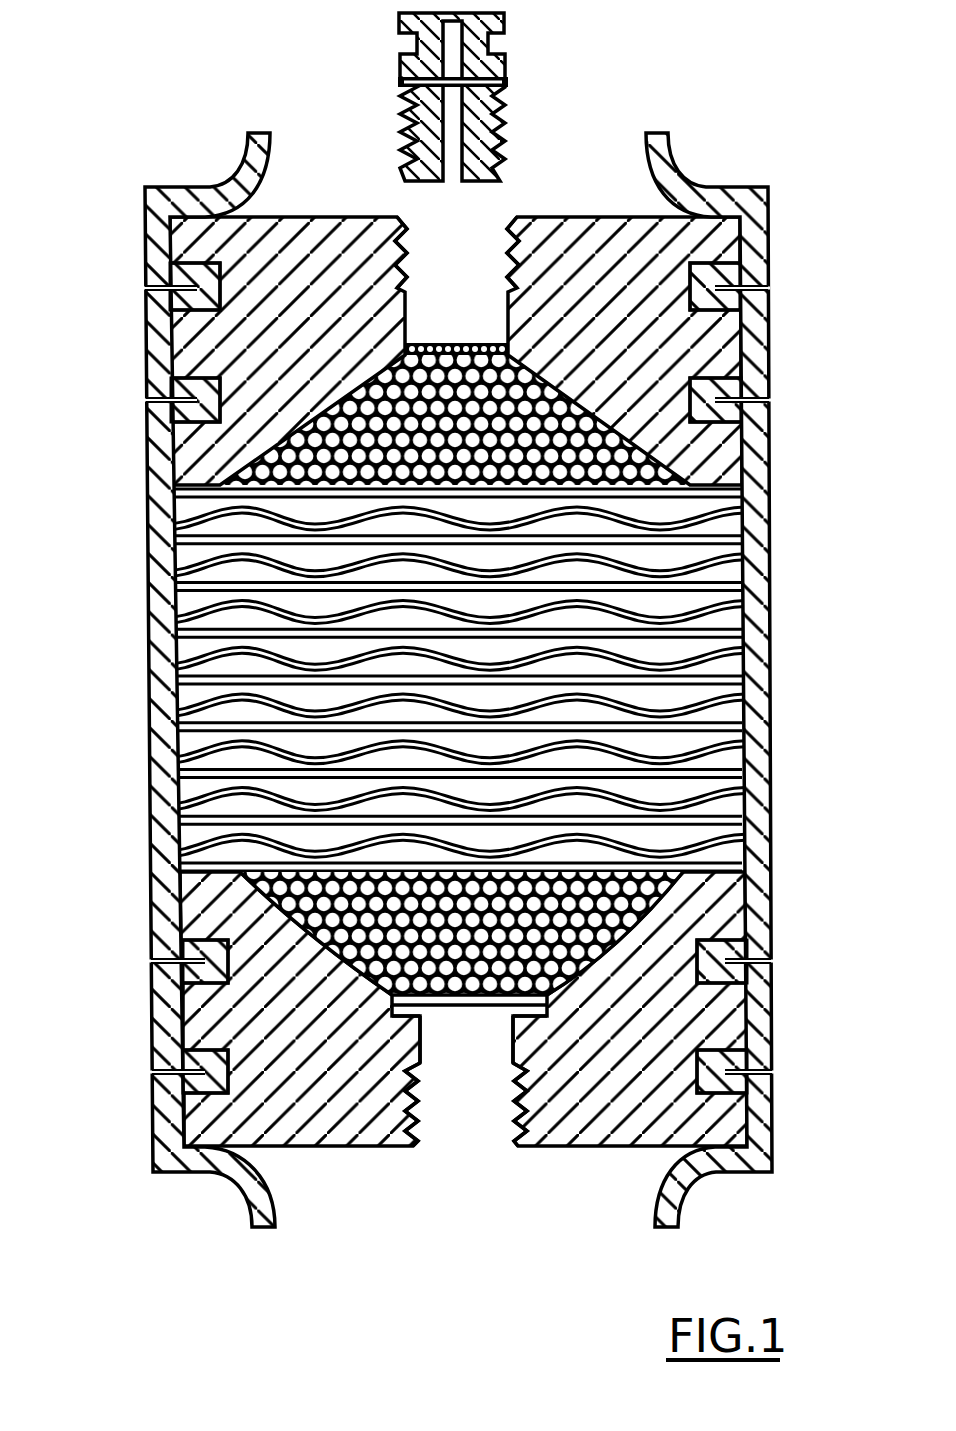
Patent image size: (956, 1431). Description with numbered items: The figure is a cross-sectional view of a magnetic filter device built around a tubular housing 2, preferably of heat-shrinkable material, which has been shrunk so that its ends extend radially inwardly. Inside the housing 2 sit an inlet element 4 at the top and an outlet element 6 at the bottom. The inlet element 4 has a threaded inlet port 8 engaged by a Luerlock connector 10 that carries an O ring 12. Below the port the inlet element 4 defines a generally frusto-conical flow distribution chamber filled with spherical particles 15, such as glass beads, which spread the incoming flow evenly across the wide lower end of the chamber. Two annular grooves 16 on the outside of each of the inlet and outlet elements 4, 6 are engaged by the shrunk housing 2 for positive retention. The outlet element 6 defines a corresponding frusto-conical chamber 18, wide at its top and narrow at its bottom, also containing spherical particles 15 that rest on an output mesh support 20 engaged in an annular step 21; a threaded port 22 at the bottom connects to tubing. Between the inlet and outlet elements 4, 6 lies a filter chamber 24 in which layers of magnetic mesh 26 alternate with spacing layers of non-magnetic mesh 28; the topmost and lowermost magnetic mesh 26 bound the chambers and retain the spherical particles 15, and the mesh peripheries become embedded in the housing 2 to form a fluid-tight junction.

The housing 2 is at (147, 658).
The inlet element 4 is at (370, 280).
The outlet element 6 is at (300, 1100).
The threaded inlet port 8 is at (405, 240).
The connector 10 is at (410, 92).
The O ring 12 is at (500, 88).
The spherical particles 15 is at (480, 345).
The annular grooves 16 is at (745, 237).
The frusto-conical chamber 18 is at (190, 903).
The output mesh support 20 is at (487, 1007).
The annular step 21 is at (510, 1016).
The threaded port 22 is at (410, 1122).
The filter chamber 24 is at (183, 583).
The magnetic mesh layers 26 is at (740, 572).
The non-magnetic mesh layers 28 is at (740, 675).